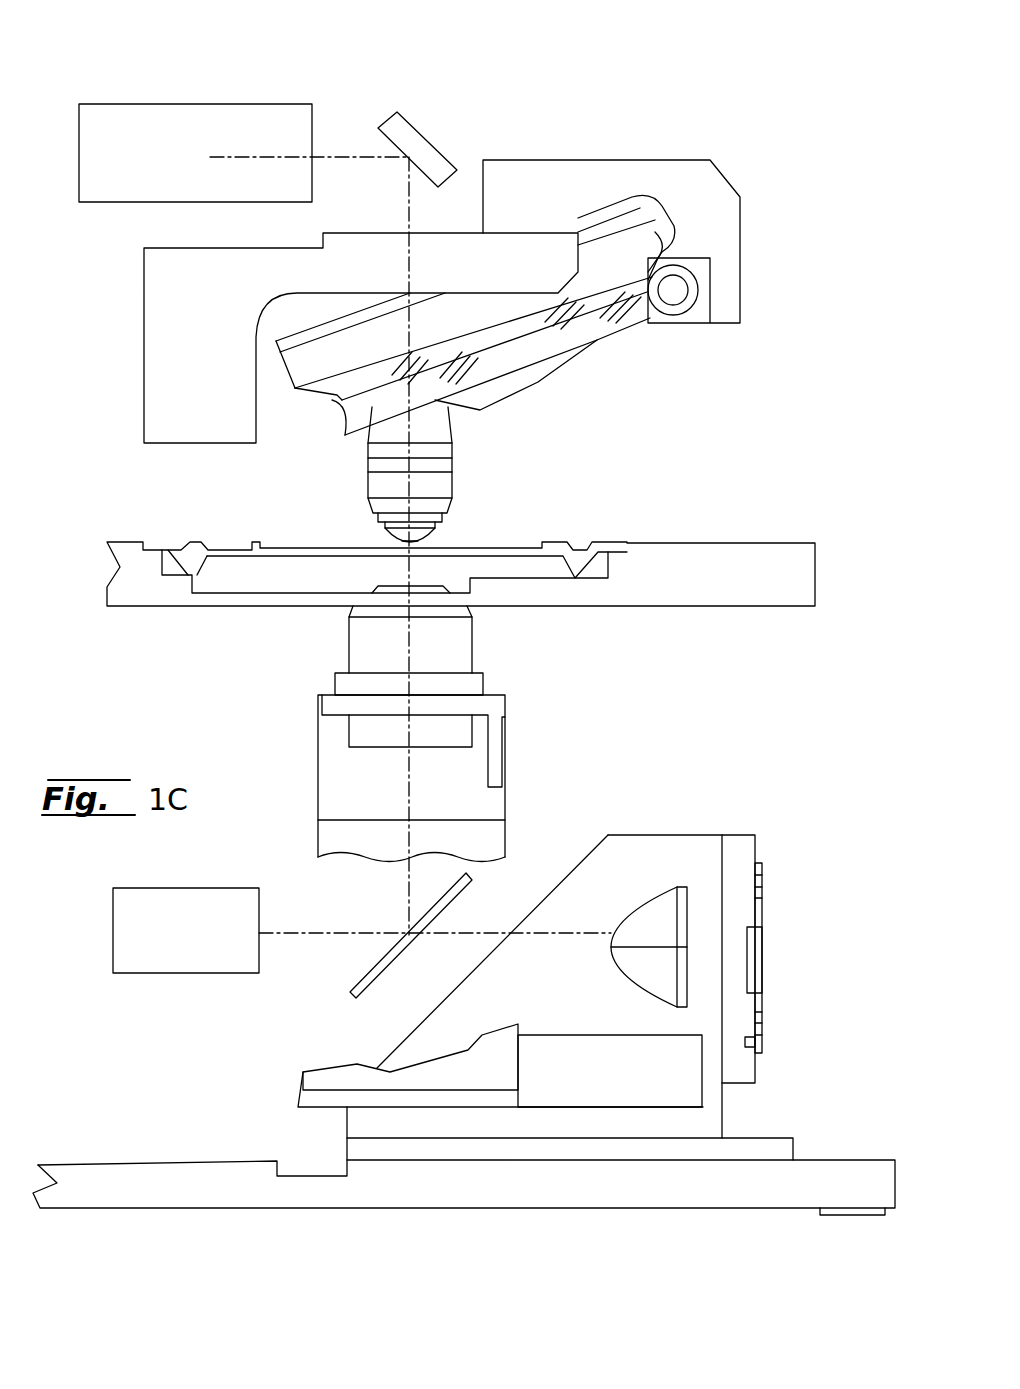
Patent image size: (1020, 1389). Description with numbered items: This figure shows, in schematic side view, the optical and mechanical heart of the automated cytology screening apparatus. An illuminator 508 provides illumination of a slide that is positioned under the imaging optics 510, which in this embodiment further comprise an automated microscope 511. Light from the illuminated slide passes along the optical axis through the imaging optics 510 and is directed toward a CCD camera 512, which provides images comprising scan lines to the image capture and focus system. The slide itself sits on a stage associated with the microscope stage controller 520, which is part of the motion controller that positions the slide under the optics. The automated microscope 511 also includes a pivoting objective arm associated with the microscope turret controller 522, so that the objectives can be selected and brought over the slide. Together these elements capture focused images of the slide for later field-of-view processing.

The illuminator 508 is at (182, 975).
The imaging optics 510 is at (320, 479).
The automated microscope 511 is at (740, 165).
The CCD camera 512 is at (246, 104).
The microscope stage controller 520 is at (767, 542).
The microscope turret controller 522 is at (662, 230).